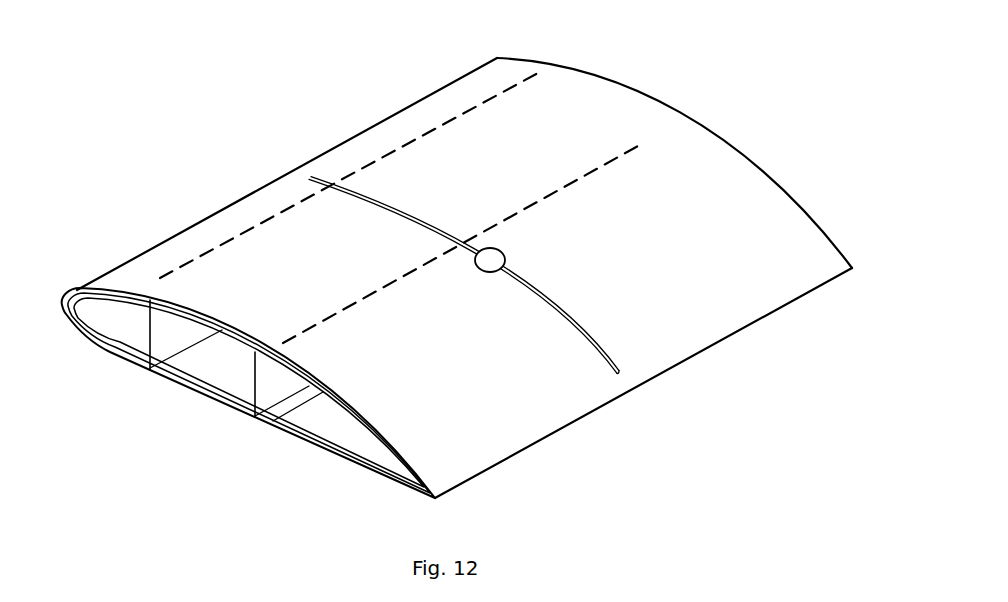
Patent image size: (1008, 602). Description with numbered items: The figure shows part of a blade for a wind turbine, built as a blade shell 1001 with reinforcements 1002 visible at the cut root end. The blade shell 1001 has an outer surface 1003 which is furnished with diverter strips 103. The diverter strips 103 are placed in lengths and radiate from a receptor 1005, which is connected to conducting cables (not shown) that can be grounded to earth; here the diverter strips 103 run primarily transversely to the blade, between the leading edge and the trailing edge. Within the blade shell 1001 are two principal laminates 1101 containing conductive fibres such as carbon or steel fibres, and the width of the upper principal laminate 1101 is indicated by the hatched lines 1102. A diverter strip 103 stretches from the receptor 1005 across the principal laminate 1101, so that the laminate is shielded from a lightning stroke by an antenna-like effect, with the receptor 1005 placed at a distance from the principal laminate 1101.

The blade shell 1001 is at (327, 120).
The principal laminate 1101 is at (170, 297).
The reinforcements 1002 is at (275, 388).
The hatched lines 1102 is at (538, 73).
The diverter strips 103 is at (612, 363).
The receptor 1005 is at (497, 270).
The outer surface 1003 is at (468, 442).